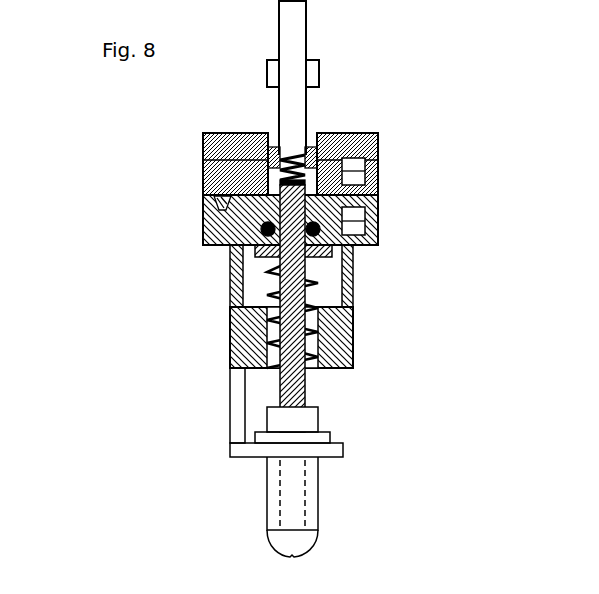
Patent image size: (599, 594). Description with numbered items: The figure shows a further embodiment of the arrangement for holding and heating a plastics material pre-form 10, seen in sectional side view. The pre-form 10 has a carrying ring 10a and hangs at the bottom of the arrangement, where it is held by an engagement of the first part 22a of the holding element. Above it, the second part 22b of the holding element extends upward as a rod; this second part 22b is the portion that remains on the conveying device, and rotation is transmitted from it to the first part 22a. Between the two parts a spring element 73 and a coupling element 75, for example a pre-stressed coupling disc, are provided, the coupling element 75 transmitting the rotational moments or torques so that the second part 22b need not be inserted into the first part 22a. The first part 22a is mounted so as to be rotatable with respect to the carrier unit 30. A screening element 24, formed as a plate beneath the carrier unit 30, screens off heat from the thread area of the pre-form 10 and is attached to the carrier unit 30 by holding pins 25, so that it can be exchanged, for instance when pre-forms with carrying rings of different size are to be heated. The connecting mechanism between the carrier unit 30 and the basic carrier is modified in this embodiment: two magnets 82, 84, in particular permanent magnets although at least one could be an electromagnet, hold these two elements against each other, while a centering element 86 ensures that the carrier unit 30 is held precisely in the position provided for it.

The plastics material pre-form 10 is at (303, 500).
The carrying ring 10a is at (330, 438).
The first part of the holding element 22a is at (305, 393).
The second part of the holding element 22b is at (306, 93).
The screening element 24 is at (252, 455).
The holding pins 25 is at (235, 413).
The carrier unit 30 is at (204, 272).
The spring element 73 is at (305, 158).
The coupling element 75 is at (312, 186).
The magnet 82 is at (368, 222).
The magnet 84 is at (340, 165).
The centering element 86 is at (203, 210).